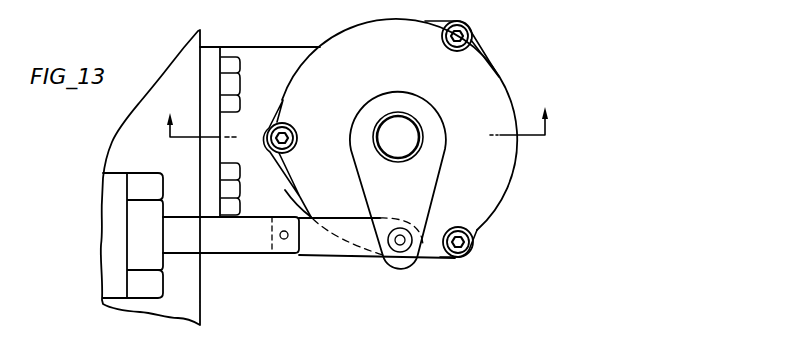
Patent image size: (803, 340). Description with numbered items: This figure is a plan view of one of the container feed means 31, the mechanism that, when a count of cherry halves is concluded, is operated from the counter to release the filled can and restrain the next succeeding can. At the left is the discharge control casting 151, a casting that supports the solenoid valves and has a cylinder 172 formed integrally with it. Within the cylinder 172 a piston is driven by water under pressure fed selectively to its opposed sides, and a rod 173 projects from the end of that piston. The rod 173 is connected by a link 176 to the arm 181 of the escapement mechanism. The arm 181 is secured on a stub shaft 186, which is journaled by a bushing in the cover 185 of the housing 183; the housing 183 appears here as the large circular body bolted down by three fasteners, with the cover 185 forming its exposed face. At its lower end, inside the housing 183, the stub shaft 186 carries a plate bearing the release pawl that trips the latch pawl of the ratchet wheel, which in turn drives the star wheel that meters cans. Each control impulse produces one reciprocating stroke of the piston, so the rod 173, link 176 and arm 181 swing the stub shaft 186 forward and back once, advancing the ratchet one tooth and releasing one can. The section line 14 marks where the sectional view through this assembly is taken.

The section line 14— 14 is at (364, 112).
The container feed means 31 is at (499, 219).
The discharge control casting 151 is at (140, 130).
The cylinder 172 is at (118, 277).
The rod 173 is at (237, 238).
The link 176 is at (327, 242).
The arm 181 is at (423, 193).
The escapement mechanism housing 183 is at (490, 86).
The cover 185 is at (396, 78).
The stub shaft 186 is at (405, 135).